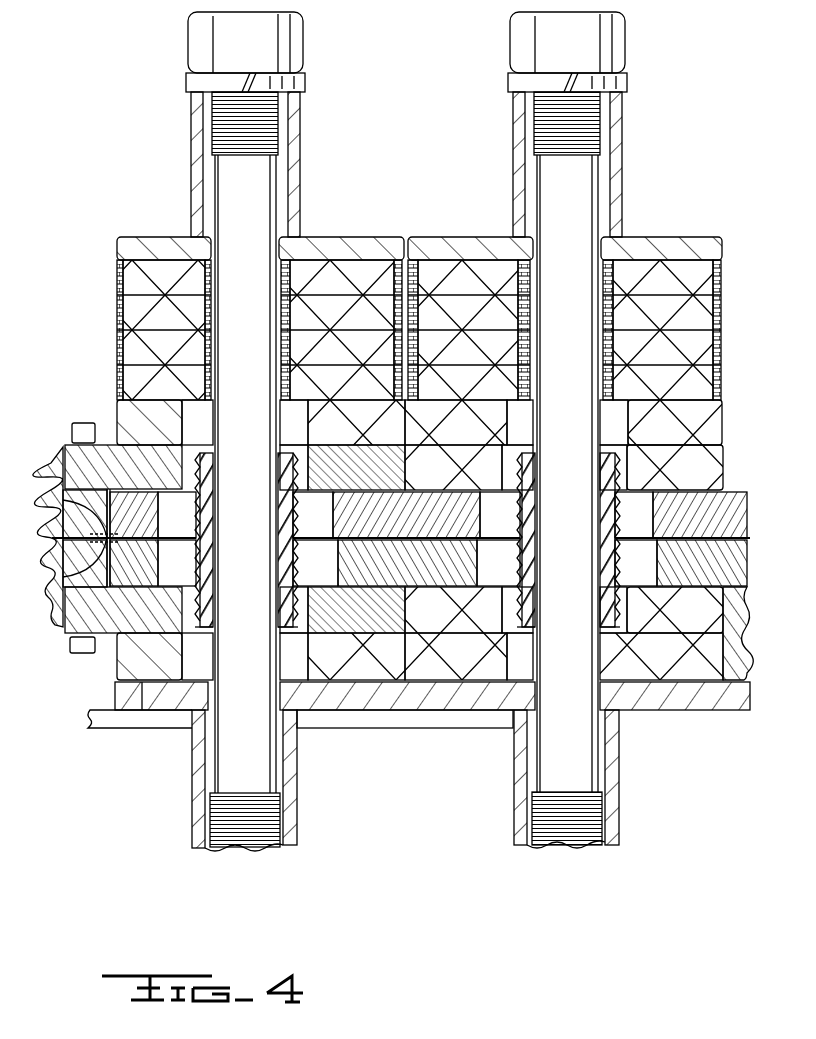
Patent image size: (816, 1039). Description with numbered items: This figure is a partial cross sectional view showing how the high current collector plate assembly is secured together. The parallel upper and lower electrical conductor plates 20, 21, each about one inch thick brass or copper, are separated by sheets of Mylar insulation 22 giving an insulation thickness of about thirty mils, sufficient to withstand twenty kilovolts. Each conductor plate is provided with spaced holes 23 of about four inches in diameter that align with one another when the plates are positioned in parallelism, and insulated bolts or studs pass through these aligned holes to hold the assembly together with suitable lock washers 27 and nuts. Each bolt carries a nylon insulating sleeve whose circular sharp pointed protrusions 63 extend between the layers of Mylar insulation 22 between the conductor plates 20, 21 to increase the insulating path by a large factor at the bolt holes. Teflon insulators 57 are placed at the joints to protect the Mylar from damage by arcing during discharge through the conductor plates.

The lock washers 27 is at (305, 88).
The Teflon insulators 57 is at (74, 514).
The spaced holes 23 is at (190, 537).
The sheets of Mylar insulation 22 is at (362, 537).
The upper electrical conductor plate 20 is at (458, 518).
The lower electrical conductor plate 21 is at (458, 567).
The circular sharp pointed protrusions 63 is at (630, 540).